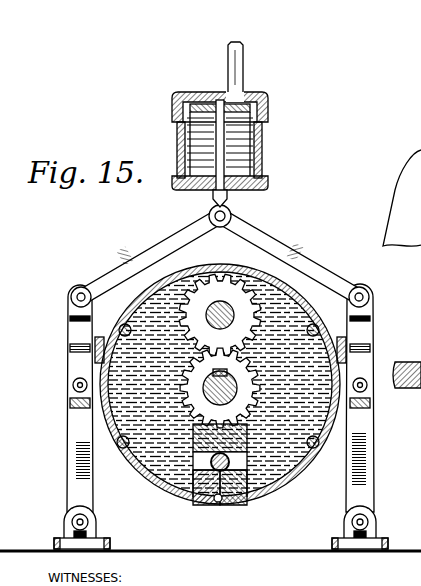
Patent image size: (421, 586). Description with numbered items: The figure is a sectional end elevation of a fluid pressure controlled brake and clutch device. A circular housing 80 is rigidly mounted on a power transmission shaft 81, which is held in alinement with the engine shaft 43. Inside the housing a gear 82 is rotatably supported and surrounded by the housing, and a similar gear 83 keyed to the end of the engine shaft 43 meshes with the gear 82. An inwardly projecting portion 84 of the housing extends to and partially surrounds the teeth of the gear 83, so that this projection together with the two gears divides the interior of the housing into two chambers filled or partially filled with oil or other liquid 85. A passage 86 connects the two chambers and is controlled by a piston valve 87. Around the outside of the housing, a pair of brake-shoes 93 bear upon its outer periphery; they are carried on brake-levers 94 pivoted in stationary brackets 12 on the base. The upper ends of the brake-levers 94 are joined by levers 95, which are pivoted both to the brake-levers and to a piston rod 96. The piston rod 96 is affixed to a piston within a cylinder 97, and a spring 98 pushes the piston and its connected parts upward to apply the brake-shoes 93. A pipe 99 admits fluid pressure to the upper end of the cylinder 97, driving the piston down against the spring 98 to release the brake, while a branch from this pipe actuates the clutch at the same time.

The stationary bracket 12 is at (76, 521).
The engine shaft 43 is at (228, 397).
The circular housing 80 is at (218, 276).
The power transmission shaft 81 is at (406, 355).
The gear 82 is at (292, 289).
The gear 83 is at (192, 410).
The inwardly projecting portion 84 is at (190, 490).
The oil or other liquid 85 is at (322, 334).
The passage 86 is at (254, 500).
The piston valve 87 is at (208, 478).
The brake-shoe 93 is at (90, 402).
The brake-lever 94 is at (77, 448).
The lever 95 is at (110, 266).
The piston rod 96 is at (198, 192).
The cylinder 97 is at (266, 128).
The spring 98 is at (266, 191).
The pipe 99 is at (244, 70).